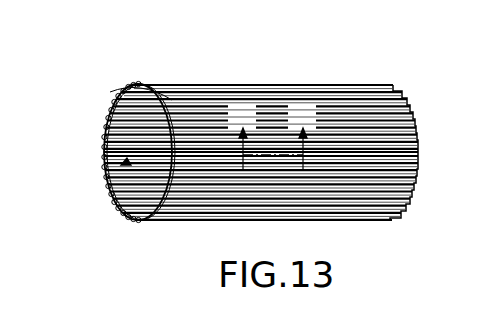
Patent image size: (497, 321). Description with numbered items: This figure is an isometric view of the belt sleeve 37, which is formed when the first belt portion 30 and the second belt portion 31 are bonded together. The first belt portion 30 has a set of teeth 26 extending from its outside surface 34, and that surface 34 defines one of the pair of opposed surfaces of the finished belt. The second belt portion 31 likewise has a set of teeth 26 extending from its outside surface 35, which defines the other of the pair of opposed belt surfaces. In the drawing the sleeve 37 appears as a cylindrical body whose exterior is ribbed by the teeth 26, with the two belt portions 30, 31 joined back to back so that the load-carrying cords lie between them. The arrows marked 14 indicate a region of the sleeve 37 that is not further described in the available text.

The strand elements 14 is at (277, 135).
The teeth 26 is at (113, 107).
The first belt portion 30 is at (140, 82).
The second belt portion 31 is at (110, 174).
The outside surface 34 is at (172, 112).
The outside surface 35 is at (113, 141).
The belt sleeve 37 is at (241, 125).